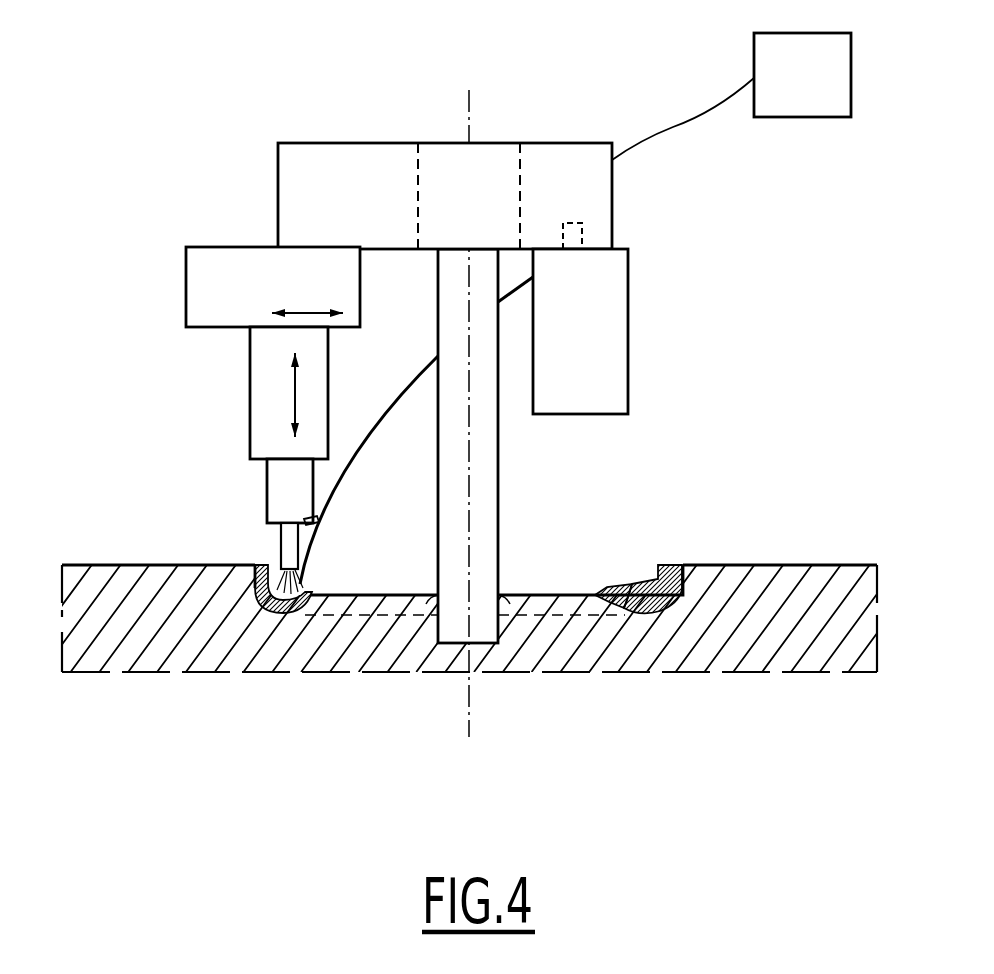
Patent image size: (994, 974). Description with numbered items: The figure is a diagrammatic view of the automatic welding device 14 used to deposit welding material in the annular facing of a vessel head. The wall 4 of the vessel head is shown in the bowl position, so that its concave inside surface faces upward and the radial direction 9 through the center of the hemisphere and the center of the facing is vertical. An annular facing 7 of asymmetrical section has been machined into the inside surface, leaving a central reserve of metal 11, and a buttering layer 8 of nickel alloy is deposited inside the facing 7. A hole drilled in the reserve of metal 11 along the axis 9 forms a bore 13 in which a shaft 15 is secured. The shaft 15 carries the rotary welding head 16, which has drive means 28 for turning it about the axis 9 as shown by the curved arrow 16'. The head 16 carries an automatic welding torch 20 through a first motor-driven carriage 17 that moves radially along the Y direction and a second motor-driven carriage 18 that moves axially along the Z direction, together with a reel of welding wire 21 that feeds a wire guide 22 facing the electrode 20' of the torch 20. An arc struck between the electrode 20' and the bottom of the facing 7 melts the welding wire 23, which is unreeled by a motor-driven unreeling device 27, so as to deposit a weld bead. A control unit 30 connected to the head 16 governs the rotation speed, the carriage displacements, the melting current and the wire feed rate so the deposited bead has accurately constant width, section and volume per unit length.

The wall of the vessel head 4 is at (722, 638).
The annular facing 7 is at (271, 568).
The buttering layer 8 is at (652, 587).
The radial direction 9 is at (468, 523).
The reserve of metal 11 is at (400, 603).
The bore 13 is at (502, 610).
The welding device 14 is at (682, 237).
The shaft 15 is at (480, 451).
The rotary head 16 is at (516, 154).
The curved arrow 16' is at (450, 407).
The first motor-driven carriage 17 is at (222, 265).
The second motor-driven carriage 18 is at (258, 397).
The automatic welding torch 20 is at (251, 487).
The electrode 20' is at (231, 544).
The reel of welding wire 21 is at (588, 353).
The wire guide 22 is at (318, 521).
The welding wire 23 is at (398, 396).
The motor-driven unreeling device 27 is at (583, 230).
The drive means 28 is at (490, 163).
The control unit 30 is at (806, 78).